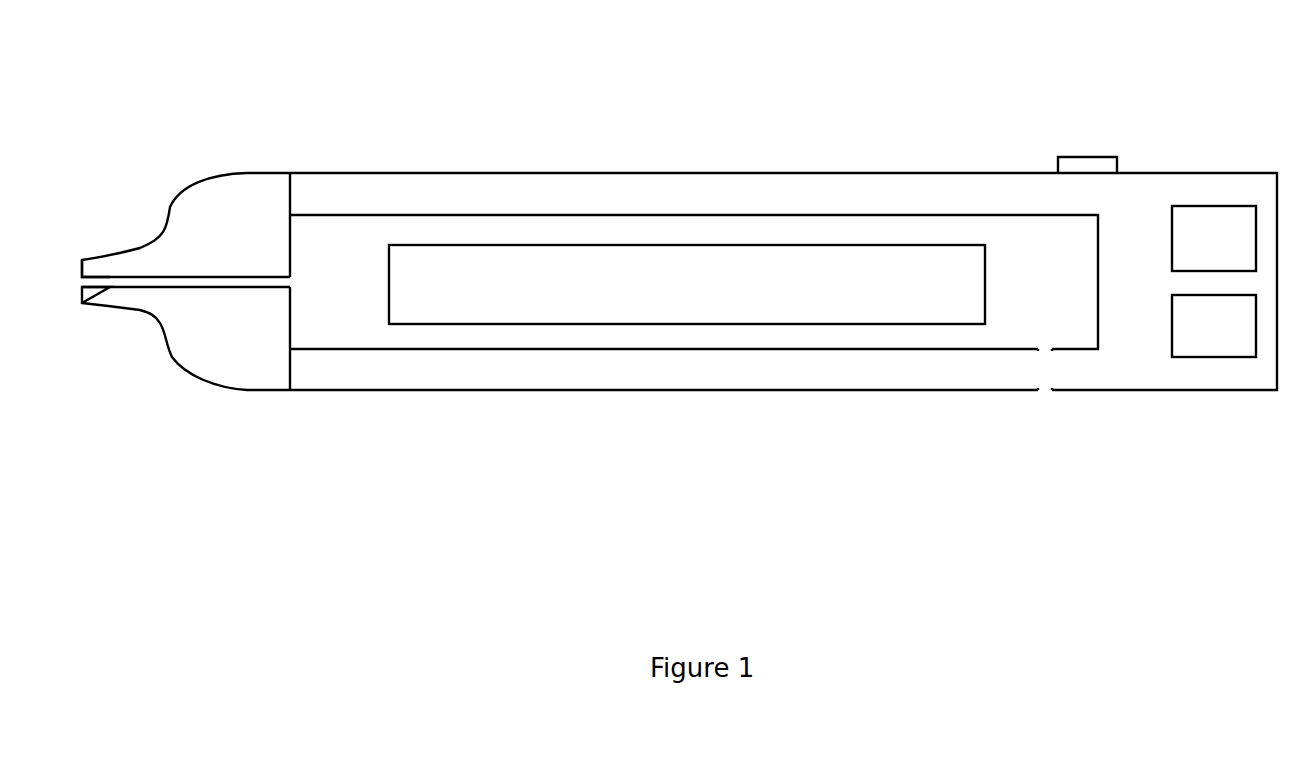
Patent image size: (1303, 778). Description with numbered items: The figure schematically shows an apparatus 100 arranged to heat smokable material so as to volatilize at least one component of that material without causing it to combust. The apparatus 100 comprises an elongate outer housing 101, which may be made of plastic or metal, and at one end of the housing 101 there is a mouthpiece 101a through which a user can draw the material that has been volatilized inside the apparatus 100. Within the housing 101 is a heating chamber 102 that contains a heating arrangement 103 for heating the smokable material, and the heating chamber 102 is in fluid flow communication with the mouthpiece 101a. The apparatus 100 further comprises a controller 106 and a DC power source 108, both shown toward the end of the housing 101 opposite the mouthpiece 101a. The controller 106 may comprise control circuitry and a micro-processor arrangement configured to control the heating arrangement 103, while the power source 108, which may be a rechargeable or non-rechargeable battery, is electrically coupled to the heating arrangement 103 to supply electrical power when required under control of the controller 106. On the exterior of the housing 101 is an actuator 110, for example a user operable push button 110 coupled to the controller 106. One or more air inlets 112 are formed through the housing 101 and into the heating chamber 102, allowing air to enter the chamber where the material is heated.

The apparatus 100 is at (461, 106).
The outer housing 101 is at (350, 170).
The mouthpiece 101a is at (158, 232).
The heating chamber 102 is at (583, 212).
The heating arrangement 103 is at (790, 244).
The controller 106 is at (1207, 206).
The DC power source 108 is at (1203, 357).
The actuator 110 is at (1093, 152).
The air inlet 112 is at (1046, 383).